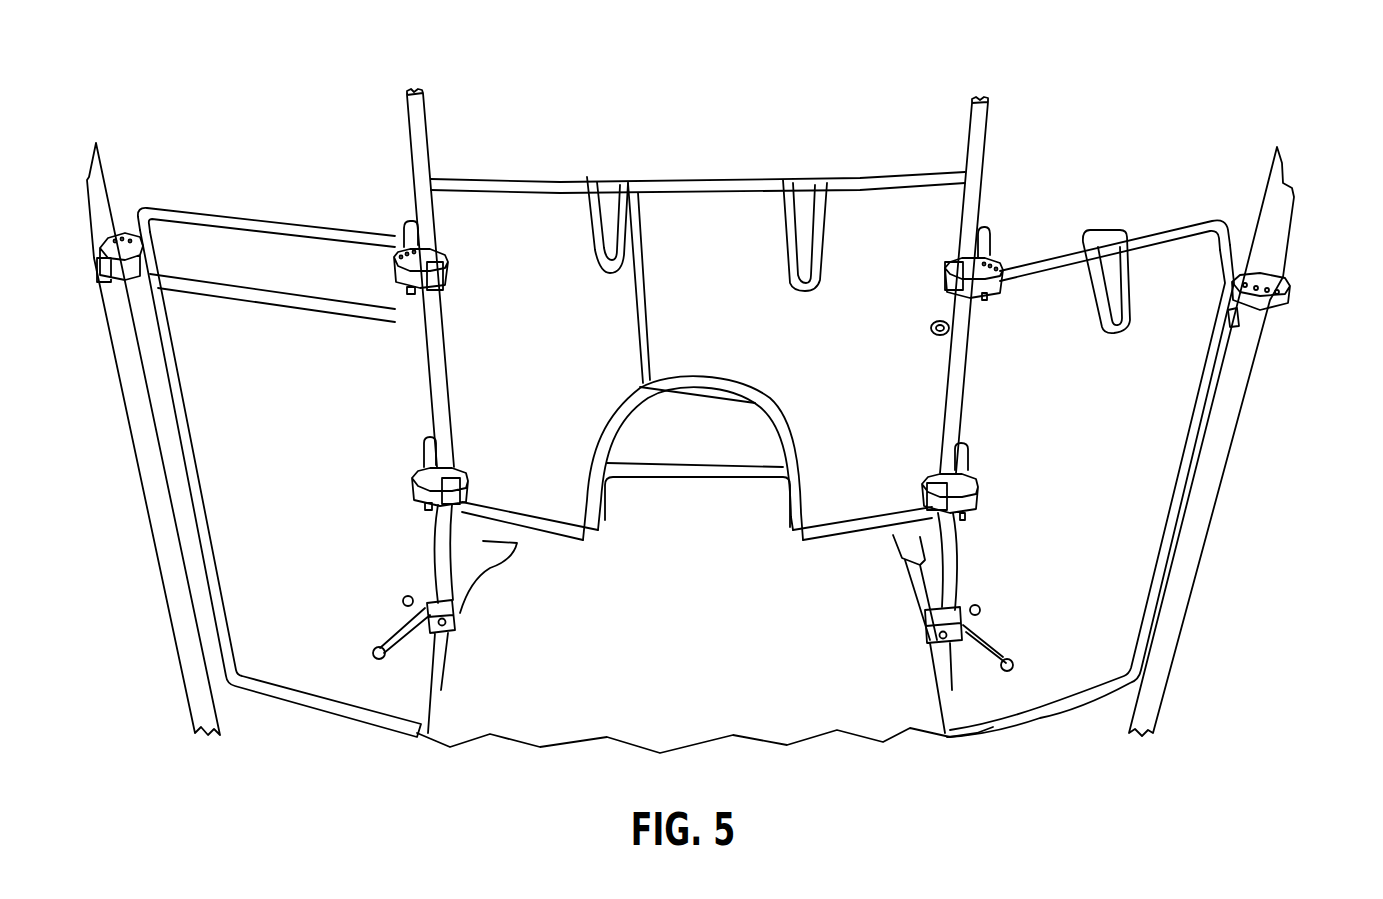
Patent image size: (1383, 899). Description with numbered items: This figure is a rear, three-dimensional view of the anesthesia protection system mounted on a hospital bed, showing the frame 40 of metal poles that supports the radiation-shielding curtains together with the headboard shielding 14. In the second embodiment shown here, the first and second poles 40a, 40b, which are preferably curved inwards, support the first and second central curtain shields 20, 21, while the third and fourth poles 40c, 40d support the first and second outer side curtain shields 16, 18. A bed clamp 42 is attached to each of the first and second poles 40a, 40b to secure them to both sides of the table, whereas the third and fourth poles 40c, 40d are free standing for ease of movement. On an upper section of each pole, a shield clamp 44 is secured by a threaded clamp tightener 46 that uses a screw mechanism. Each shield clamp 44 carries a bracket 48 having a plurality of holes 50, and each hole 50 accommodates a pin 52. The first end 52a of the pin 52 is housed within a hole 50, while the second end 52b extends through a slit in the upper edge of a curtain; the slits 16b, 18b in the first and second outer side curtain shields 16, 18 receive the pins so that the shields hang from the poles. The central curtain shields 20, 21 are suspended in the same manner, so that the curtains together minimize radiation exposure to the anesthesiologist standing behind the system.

The headboard shielding 14 is at (1003, 378).
The first outer side curtain shield 16 is at (1175, 440).
The slit 16b is at (1160, 243).
The second outer side curtain shield 18 is at (223, 347).
The slit 18b is at (238, 217).
The first central curtain shield 20 is at (728, 220).
The second central curtain shield 21 is at (507, 220).
The frame 40 is at (380, 135).
The first pole 40a is at (973, 123).
The second pole 40b is at (417, 117).
The third pole 40c is at (1280, 222).
The fourth pole 40d is at (127, 370).
The bed clamp 42 is at (433, 627).
The shield clamp 44 is at (410, 267).
The threaded clamp tightener 46 is at (1003, 277).
The bracket 48 is at (407, 277).
The holes 50 is at (400, 252).
The pin 52 is at (127, 240).
The first end of the pin 52a is at (407, 240).
The second end of the pin 52b is at (132, 237).